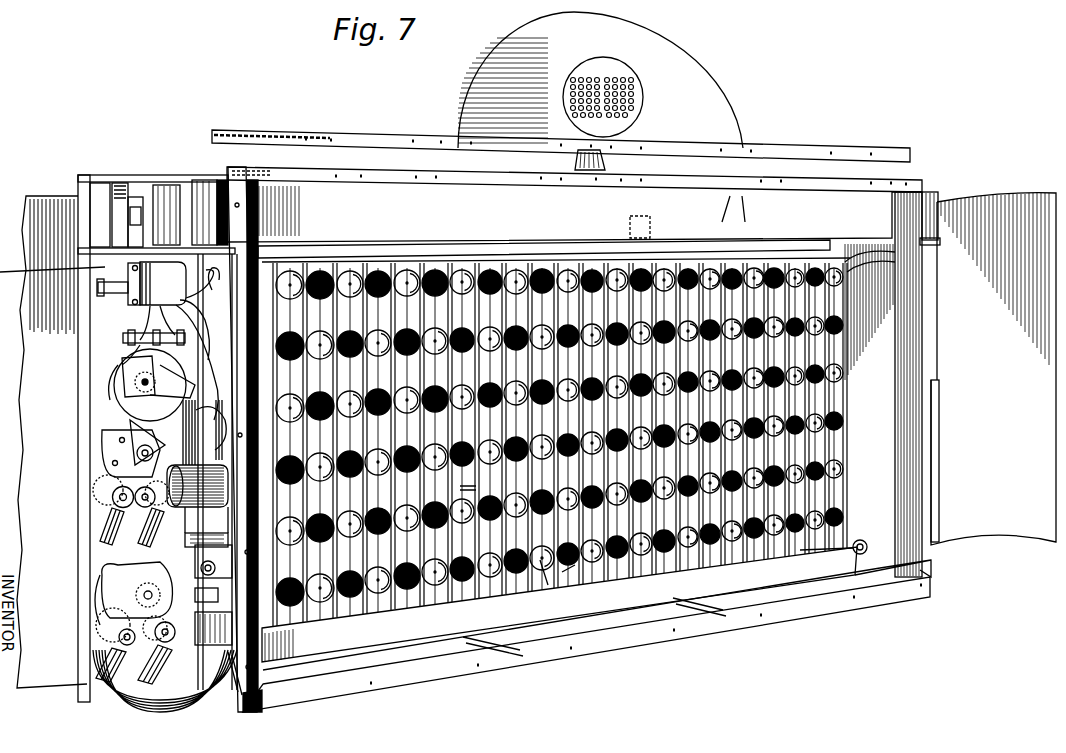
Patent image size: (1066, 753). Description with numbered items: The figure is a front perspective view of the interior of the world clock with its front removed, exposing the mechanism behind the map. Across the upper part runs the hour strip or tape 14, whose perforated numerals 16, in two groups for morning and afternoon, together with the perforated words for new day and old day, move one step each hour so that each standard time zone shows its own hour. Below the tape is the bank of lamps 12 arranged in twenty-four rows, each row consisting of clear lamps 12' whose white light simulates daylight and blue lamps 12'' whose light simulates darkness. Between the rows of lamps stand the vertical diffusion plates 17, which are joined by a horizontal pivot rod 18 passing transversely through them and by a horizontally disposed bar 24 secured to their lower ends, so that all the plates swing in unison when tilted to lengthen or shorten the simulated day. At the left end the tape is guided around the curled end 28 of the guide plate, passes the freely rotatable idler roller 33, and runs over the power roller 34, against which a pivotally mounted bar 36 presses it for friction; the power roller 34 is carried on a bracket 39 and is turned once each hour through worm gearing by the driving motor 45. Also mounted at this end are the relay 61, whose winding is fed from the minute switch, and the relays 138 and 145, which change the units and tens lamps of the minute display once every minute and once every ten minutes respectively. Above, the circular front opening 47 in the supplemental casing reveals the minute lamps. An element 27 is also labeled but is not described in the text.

The bank of lamps 12 is at (564, 442).
The clear lamps 12' is at (855, 445).
The blue lamps 12'' is at (855, 502).
The hour strip or tape 14 is at (372, 200).
The numerals 16 is at (742, 196).
The vertical diffusion plates 17 is at (563, 573).
The horizontal pivot rod 18 is at (474, 477).
The horizontally disposed bar 24 is at (322, 618).
The hour pointer frame 27 is at (645, 216).
The curled end 28 is at (166, 185).
The idler roller 33 is at (198, 180).
The power roller 34 is at (97, 193).
The pivotally mounted bar 36 is at (134, 197).
The bracket 39 is at (119, 184).
The driving motor 45 is at (158, 341).
The front opening 47 is at (630, 129).
The relay 61 is at (122, 365).
The relay 138 is at (110, 500).
The relay 145 is at (110, 646).